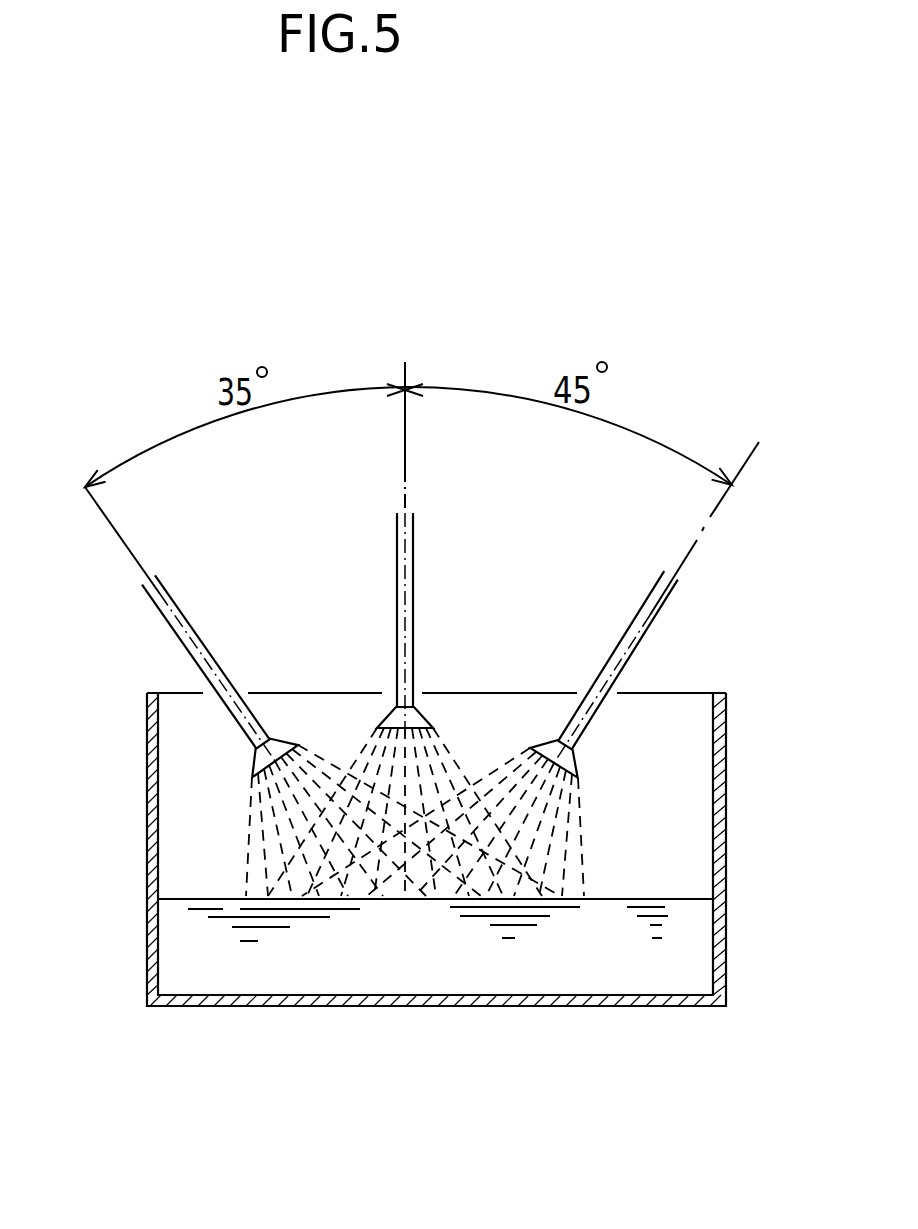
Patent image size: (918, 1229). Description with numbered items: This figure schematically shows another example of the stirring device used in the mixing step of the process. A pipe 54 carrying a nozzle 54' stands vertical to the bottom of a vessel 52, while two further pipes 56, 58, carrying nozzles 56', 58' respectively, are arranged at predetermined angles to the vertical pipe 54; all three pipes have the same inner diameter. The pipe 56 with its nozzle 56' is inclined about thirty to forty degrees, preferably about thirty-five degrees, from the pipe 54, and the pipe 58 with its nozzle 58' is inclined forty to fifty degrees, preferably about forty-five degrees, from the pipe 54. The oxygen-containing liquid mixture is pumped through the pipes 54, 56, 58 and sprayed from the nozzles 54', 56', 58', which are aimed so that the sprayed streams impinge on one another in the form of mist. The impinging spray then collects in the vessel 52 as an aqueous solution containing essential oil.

The vessel 52 is at (726, 852).
The pipe 54 is at (444, 624).
The nozzle 54' is at (405, 749).
The pipe 56 is at (173, 676).
The nozzle 56' is at (393, 747).
The pipe 58 is at (658, 674).
The nozzle 58' is at (443, 749).